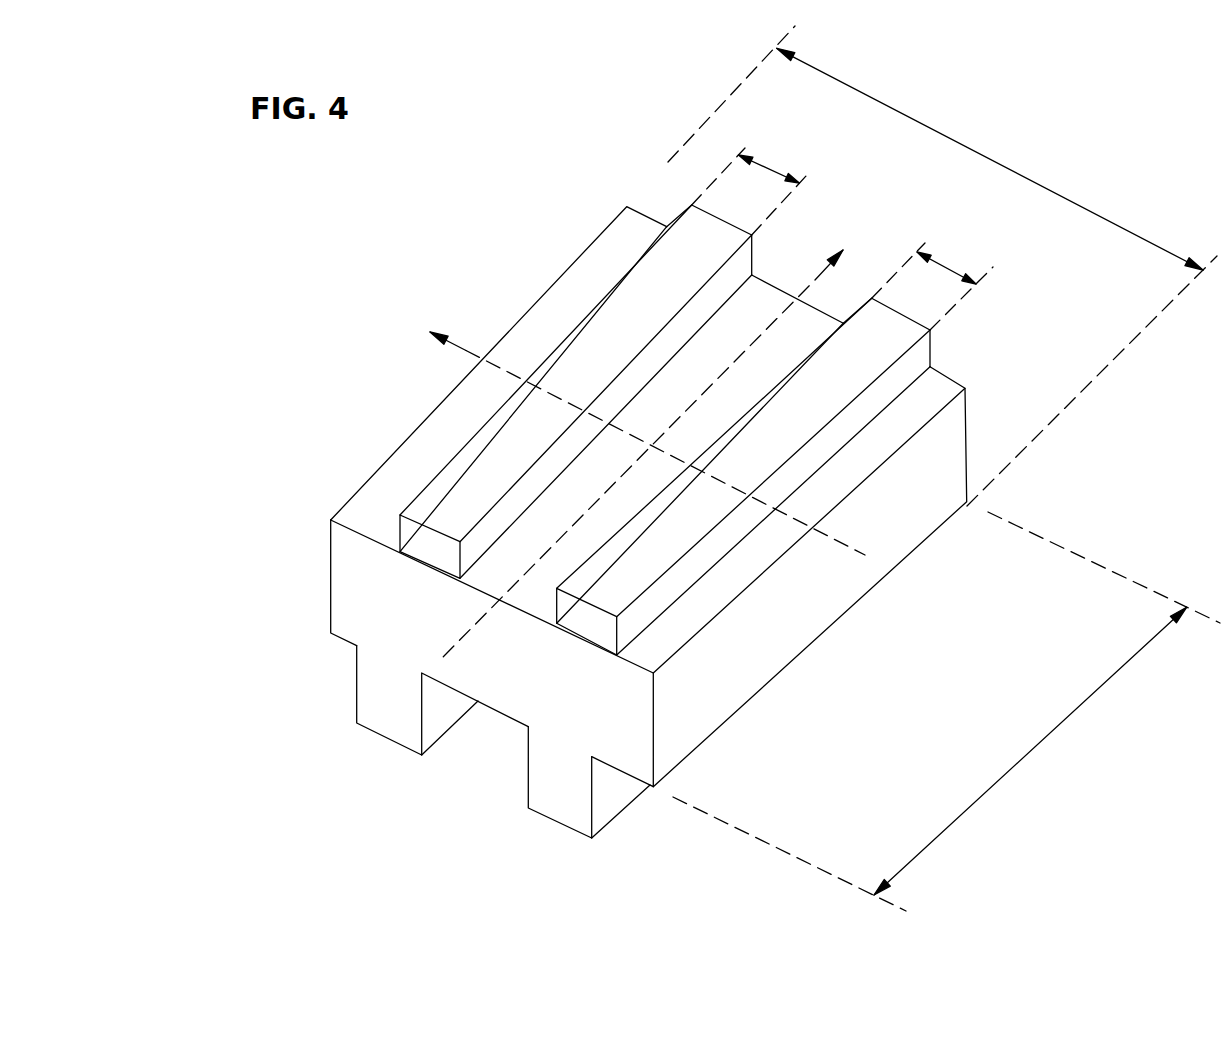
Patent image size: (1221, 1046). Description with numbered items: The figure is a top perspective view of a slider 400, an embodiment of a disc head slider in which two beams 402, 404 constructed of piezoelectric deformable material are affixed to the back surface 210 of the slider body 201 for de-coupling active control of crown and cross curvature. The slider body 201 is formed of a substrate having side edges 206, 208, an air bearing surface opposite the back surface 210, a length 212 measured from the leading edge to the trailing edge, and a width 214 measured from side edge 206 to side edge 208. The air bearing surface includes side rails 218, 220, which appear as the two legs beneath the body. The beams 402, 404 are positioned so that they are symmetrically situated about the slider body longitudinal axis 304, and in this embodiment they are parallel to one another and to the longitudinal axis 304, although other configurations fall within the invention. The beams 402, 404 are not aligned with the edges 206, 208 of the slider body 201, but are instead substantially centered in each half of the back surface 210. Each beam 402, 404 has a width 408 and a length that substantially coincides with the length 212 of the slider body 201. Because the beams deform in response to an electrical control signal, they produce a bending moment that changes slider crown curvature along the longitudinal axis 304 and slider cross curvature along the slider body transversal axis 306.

The slider 400 is at (366, 409).
The beam 402 is at (672, 222).
The beam 404 is at (932, 347).
The width 408 is at (768, 170).
The slider body longitudinal axis 304 is at (808, 285).
The slider body transversal axis 306 is at (476, 360).
The width 214 is at (927, 129).
The length 212 is at (1034, 748).
The back surface 210 is at (366, 534).
The side edge 208 is at (333, 578).
The side edge 206 is at (670, 729).
The slider body 201 is at (376, 675).
The side rail 220 is at (388, 738).
The side rail 218 is at (549, 818).